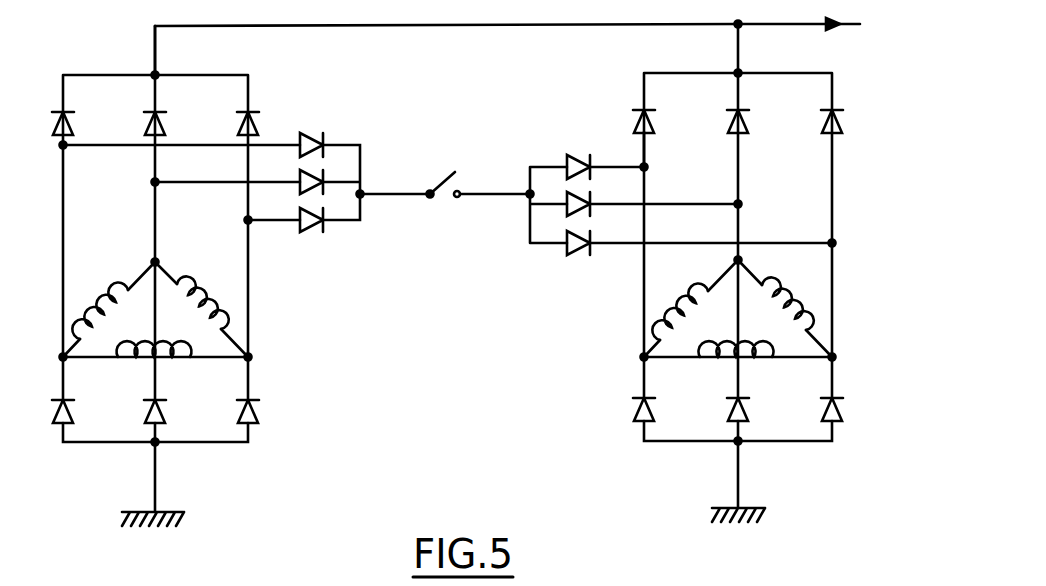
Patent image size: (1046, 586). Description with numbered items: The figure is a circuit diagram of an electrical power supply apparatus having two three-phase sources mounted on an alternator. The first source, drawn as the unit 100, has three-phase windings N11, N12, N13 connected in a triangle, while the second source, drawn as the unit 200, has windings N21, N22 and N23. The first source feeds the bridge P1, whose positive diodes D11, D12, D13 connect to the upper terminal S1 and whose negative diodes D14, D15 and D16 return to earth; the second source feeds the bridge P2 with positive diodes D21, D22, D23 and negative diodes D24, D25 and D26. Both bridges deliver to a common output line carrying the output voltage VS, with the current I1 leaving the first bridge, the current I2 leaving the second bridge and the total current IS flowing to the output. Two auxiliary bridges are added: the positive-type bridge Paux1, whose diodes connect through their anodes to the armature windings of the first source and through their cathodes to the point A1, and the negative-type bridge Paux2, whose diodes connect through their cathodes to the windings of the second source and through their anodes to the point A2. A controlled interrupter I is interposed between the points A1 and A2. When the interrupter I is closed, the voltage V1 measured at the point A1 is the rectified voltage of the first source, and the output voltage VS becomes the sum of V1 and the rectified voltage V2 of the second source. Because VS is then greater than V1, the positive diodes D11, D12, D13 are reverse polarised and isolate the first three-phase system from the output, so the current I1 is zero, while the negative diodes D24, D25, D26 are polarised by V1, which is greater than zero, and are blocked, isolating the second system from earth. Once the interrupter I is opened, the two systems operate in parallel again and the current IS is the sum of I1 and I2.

The first alternator unit (positive) 100 is at (266, 283).
The second alternator unit (negative) 200 is at (852, 264).
The positive diode D11 is at (87, 107).
The positive diode D12 is at (182, 107).
The positive diode D13 is at (275, 107).
The negative diode D14 is at (87, 422).
The negative diode D15 is at (184, 422).
The negative diode D16 is at (274, 422).
The positive diode D21 is at (671, 107).
The positive diode D22 is at (769, 107).
The positive diode D23 is at (864, 107).
The negative diode D24 is at (611, 424).
The negative diode D25 is at (767, 419).
The negative diode D26 is at (860, 417).
The three-phase winding N11 is at (98, 290).
The three-phase winding N12 is at (208, 285).
The three-phase winding N13 is at (139, 373).
The three-phase winding N21 is at (680, 293).
The three-phase winding N22 is at (794, 288).
The three-phase winding N23 is at (719, 373).
The auxiliary bridge Paux1 is at (346, 221).
The auxiliary bridge Paux2 is at (673, 242).
The point A1 is at (378, 163).
The point A2 is at (508, 221).
The controlled interrupter I is at (479, 170).
The voltage V'1 V1 is at (407, 220).
The voltage V'2 V2 is at (603, 118).
The positive output terminal S1 is at (133, 49).
The current I1 is at (170, 40).
The current I2 is at (749, 40).
The current Is IS is at (811, 15).
The output voltage Vs VS is at (530, 25).
The bridge P1 is at (222, 452).
The bridge P2 is at (810, 458).